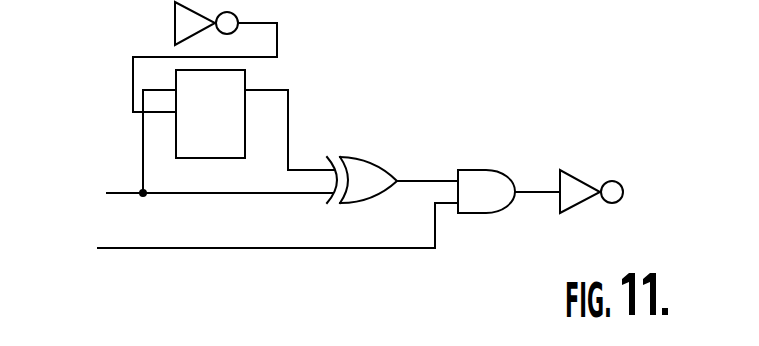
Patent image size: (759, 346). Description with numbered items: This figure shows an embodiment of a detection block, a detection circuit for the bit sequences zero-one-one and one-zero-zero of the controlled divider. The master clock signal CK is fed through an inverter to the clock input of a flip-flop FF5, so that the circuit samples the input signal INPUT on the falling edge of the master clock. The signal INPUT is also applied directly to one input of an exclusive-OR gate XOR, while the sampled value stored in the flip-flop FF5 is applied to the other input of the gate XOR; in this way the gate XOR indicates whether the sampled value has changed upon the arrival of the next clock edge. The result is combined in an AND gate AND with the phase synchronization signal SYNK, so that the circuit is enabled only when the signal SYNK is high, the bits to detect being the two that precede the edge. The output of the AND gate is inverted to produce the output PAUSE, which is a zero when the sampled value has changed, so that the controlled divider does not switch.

The master clock signal CK is at (175, 23).
The flip-flop FF5 is at (238, 132).
The input signal INPUT is at (190, 147).
The exclusive-OR gate XOR is at (392, 162).
The AND gate AND is at (509, 172).
The phase synchronization signal SYNK is at (256, 226).
The output Pause PAUSE is at (660, 192).